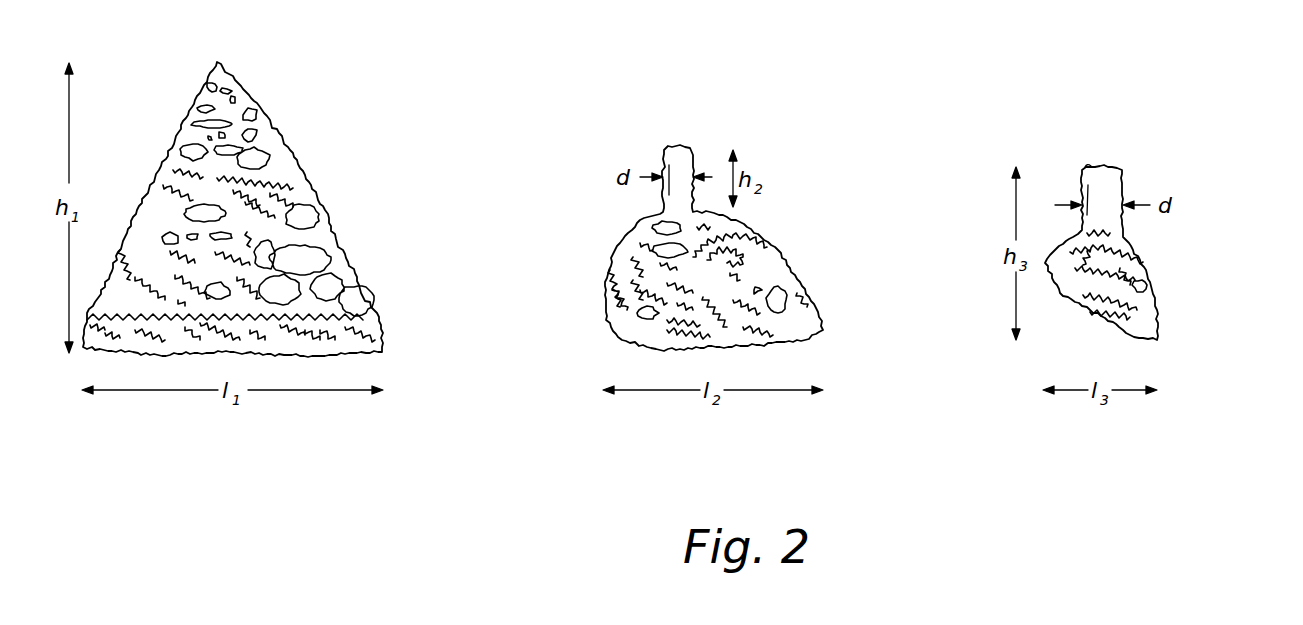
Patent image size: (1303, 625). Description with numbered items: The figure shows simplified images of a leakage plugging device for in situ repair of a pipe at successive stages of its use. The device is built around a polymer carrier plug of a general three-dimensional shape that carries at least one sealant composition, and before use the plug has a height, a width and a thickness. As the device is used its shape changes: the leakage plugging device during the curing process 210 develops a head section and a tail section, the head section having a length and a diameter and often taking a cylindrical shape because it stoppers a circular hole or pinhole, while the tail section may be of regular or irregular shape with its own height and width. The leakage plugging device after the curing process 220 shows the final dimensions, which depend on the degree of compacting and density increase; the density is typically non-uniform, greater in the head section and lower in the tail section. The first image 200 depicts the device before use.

The triangular abrasive particle 200 is at (344, 96).
The leakage plugging device during the curing process 210 is at (801, 126).
The leakage plugging device after the curing process 220 is at (1214, 158).